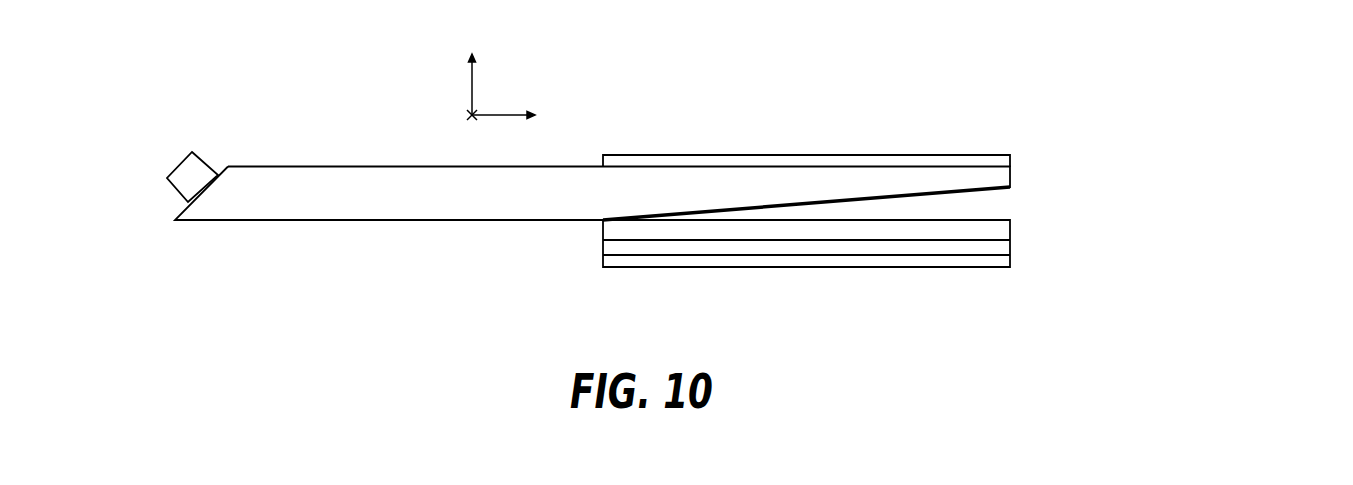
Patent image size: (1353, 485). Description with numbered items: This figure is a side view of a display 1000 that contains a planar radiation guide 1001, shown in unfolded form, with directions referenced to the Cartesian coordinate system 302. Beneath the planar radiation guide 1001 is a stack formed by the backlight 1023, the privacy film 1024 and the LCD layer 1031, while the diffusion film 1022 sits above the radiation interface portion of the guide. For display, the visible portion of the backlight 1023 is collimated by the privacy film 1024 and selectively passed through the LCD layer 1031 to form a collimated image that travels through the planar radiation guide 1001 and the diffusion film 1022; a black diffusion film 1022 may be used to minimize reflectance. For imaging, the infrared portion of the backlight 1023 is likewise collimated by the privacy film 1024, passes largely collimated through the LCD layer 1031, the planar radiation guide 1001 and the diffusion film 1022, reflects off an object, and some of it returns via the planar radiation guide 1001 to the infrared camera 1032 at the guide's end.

The display 1000 is at (413, 94).
The planar radiation guide 1001 is at (413, 206).
The reference Cartesian coordinate system 302 is at (503, 112).
The infrared camera 1032 is at (207, 165).
The diffusion film 1022 is at (1012, 162).
The LCD layer 1031 is at (1010, 228).
The privacy film 1024 is at (1010, 247).
The backlight 1023 is at (1010, 260).